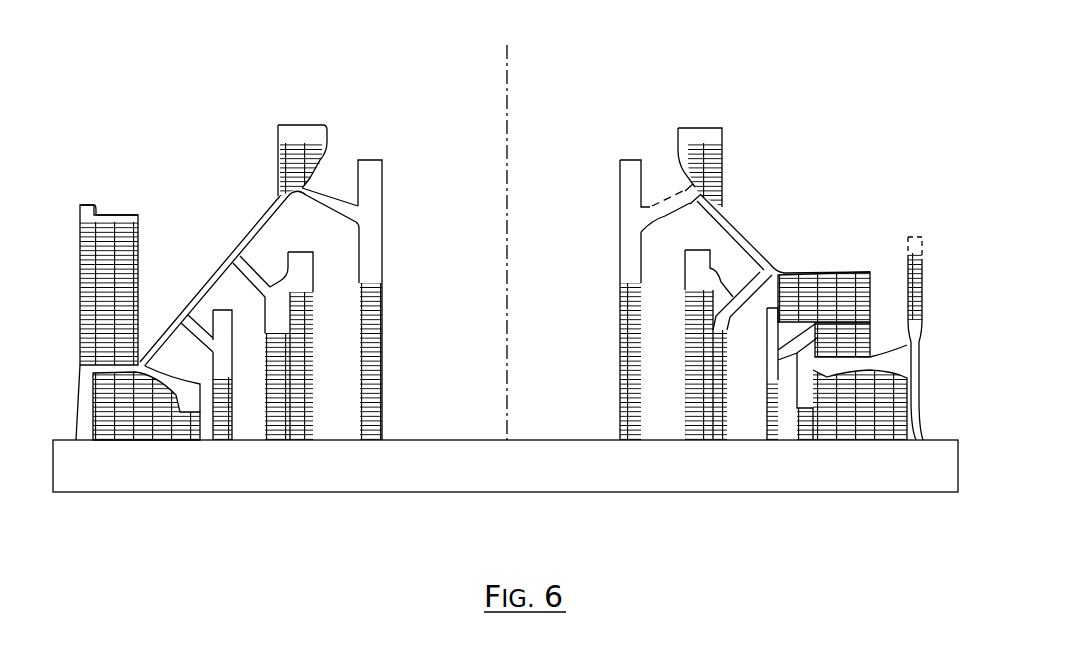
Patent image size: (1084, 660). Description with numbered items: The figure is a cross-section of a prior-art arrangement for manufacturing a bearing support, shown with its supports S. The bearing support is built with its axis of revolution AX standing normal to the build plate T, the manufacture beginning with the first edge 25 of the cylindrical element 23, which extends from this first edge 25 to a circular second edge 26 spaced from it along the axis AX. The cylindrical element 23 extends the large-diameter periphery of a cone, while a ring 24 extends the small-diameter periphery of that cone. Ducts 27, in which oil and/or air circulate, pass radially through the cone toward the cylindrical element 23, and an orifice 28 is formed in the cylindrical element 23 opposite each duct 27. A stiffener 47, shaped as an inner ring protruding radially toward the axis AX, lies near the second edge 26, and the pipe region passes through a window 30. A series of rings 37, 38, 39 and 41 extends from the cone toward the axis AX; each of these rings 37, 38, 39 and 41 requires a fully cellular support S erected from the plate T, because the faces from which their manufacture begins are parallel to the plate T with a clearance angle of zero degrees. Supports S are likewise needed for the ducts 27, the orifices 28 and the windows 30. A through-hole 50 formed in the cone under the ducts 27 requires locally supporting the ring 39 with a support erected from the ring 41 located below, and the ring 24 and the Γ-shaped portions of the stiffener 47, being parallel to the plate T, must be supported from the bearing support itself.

The cylindrical element 23 is at (905, 240).
The ring 24 is at (697, 128).
The first edge 25 is at (917, 441).
The second edge 26 is at (88, 204).
The duct 27 is at (828, 254).
The orifice 28 is at (934, 287).
The window 30 is at (64, 276).
The first ring 37 is at (399, 222).
The ring 38 is at (338, 298).
The ring 39 is at (200, 318).
The ring 41 is at (174, 408).
The stiffener 47 is at (132, 216).
The through-hole 50 is at (871, 345).
The supports S is at (308, 422).
The axis AX is at (508, 168).
The build plate T is at (505, 466).